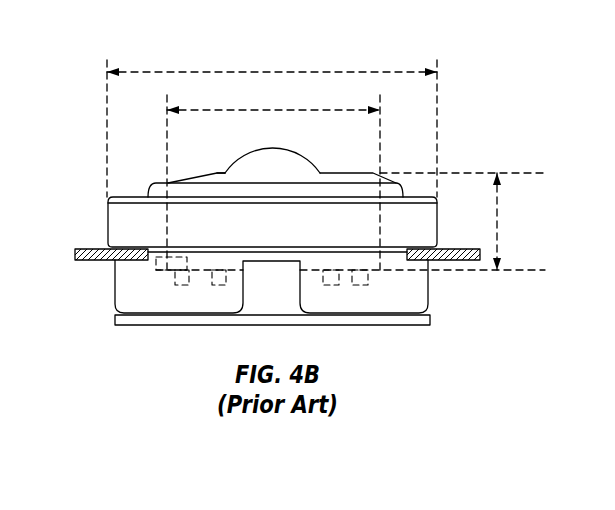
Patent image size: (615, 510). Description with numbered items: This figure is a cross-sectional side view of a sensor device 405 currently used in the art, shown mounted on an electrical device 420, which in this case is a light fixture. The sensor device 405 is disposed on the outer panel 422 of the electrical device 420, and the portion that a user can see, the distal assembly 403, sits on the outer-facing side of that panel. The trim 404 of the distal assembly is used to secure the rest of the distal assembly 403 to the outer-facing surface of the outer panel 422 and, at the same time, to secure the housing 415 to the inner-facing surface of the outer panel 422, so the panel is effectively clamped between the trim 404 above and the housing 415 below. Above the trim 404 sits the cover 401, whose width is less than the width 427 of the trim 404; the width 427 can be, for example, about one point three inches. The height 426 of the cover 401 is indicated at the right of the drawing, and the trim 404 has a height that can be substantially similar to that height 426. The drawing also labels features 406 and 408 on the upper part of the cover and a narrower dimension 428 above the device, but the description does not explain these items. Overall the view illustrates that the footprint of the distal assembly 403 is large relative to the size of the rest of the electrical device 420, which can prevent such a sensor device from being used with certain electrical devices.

The electrical device 420 is at (458, 107).
The cover 401 is at (194, 177).
The distal assembly 403 is at (107, 209).
The trim 404 is at (127, 196).
The sensor device 405 is at (107, 284).
The sloped keycap surface 406 is at (224, 172).
The dome / raised feature 408 is at (284, 148).
The housing 415 is at (140, 325).
The outer panel 422 is at (450, 249).
The height of the cover 426 is at (502, 222).
The width of the trim 427 is at (347, 64).
The inner width dimension 428 is at (283, 108).